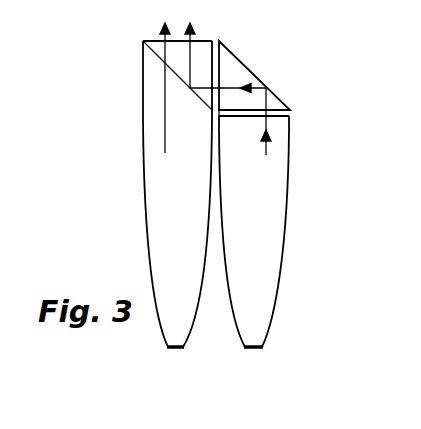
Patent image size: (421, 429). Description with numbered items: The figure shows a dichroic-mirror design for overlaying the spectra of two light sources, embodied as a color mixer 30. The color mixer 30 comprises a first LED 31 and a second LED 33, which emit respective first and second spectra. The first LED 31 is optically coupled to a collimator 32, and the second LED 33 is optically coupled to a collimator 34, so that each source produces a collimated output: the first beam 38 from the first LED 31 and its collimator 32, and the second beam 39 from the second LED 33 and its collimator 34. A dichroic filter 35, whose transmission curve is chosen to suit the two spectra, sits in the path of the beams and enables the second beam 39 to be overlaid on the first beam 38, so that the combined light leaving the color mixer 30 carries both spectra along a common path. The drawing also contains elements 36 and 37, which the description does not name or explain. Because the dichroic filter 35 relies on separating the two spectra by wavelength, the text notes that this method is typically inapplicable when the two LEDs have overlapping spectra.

The color mixer 30 is at (110, 201).
The first LED 31 is at (181, 366).
The collimator 32 is at (147, 213).
The second LED 33 is at (257, 366).
The collimator 34 is at (254, 208).
The dichroic filter 35 is at (147, 82).
The beveled end of second tube 36 is at (230, 73).
The gap between beveled end and second tube 37 is at (268, 84).
The first beam 38 is at (165, 105).
The second beam 39 is at (230, 105).